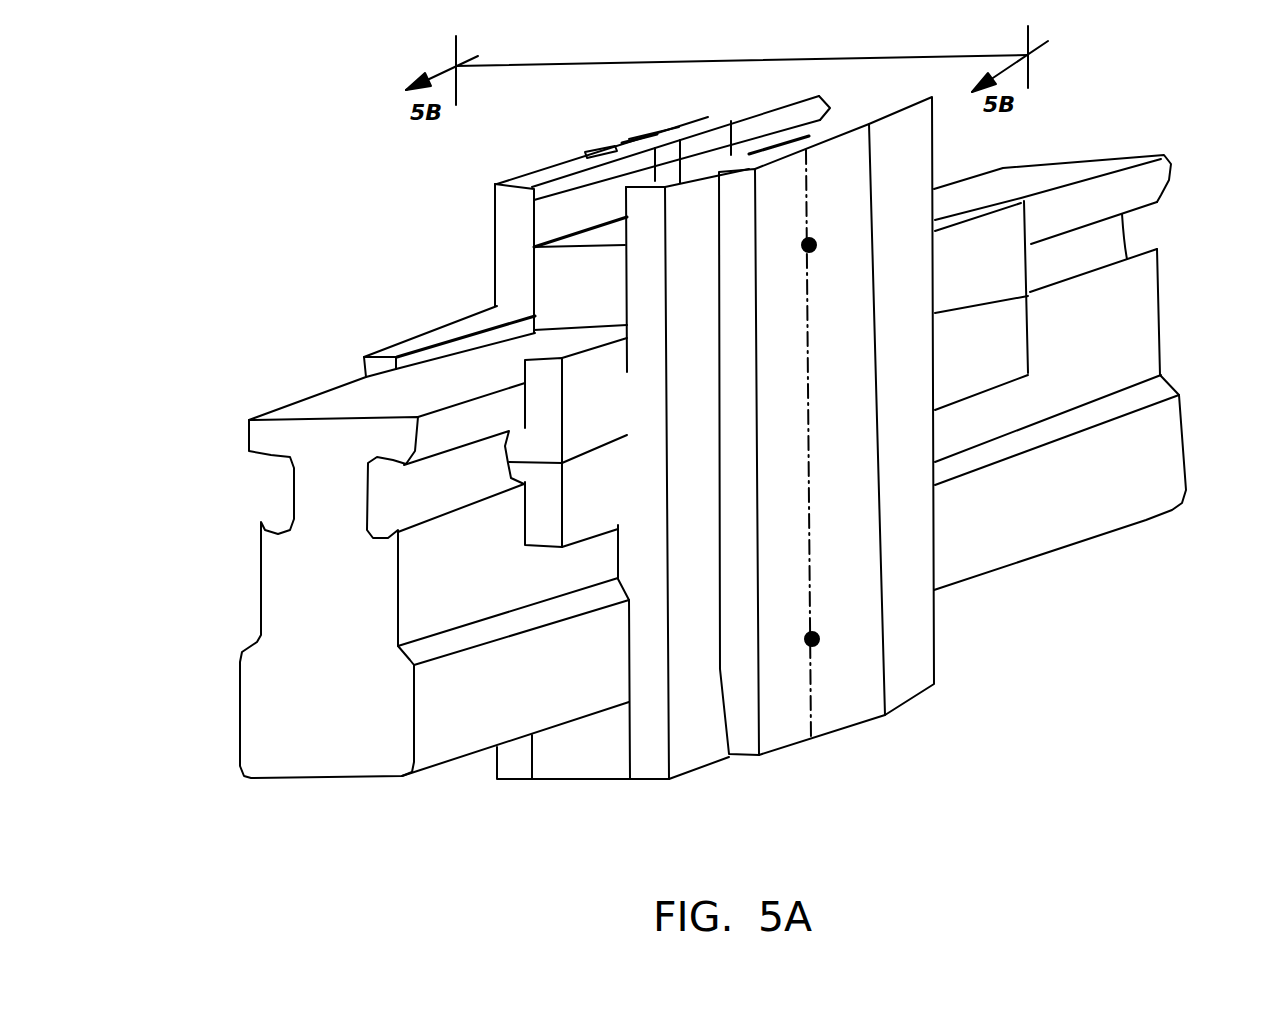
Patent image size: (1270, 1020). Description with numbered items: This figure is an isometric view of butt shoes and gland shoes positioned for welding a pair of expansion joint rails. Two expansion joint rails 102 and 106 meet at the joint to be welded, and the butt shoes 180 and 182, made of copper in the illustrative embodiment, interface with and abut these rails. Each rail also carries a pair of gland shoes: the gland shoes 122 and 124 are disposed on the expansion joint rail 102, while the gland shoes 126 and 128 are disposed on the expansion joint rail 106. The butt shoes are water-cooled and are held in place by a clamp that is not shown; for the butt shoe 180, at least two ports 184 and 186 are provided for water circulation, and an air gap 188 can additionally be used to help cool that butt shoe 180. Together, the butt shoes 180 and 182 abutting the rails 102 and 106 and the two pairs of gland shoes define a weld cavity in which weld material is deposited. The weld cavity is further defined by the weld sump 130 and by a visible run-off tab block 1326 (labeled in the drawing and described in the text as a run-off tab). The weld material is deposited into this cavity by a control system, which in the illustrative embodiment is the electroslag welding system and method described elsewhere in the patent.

The expansion joint rail 102 is at (1159, 434).
The expansion joint rail 106 is at (249, 676).
The gland shoe 122 is at (993, 190).
The gland shoe 124 is at (998, 358).
The gland shoe 126 is at (534, 377).
The gland shoe 128 is at (530, 524).
The weld sump 130 is at (574, 754).
The butt shoe 180 is at (904, 179).
The butt shoe 182 is at (596, 144).
The port 184 is at (808, 234).
The port 186 is at (812, 626).
The air gap 188 is at (821, 100).
The bracket 1326 is at (569, 262).